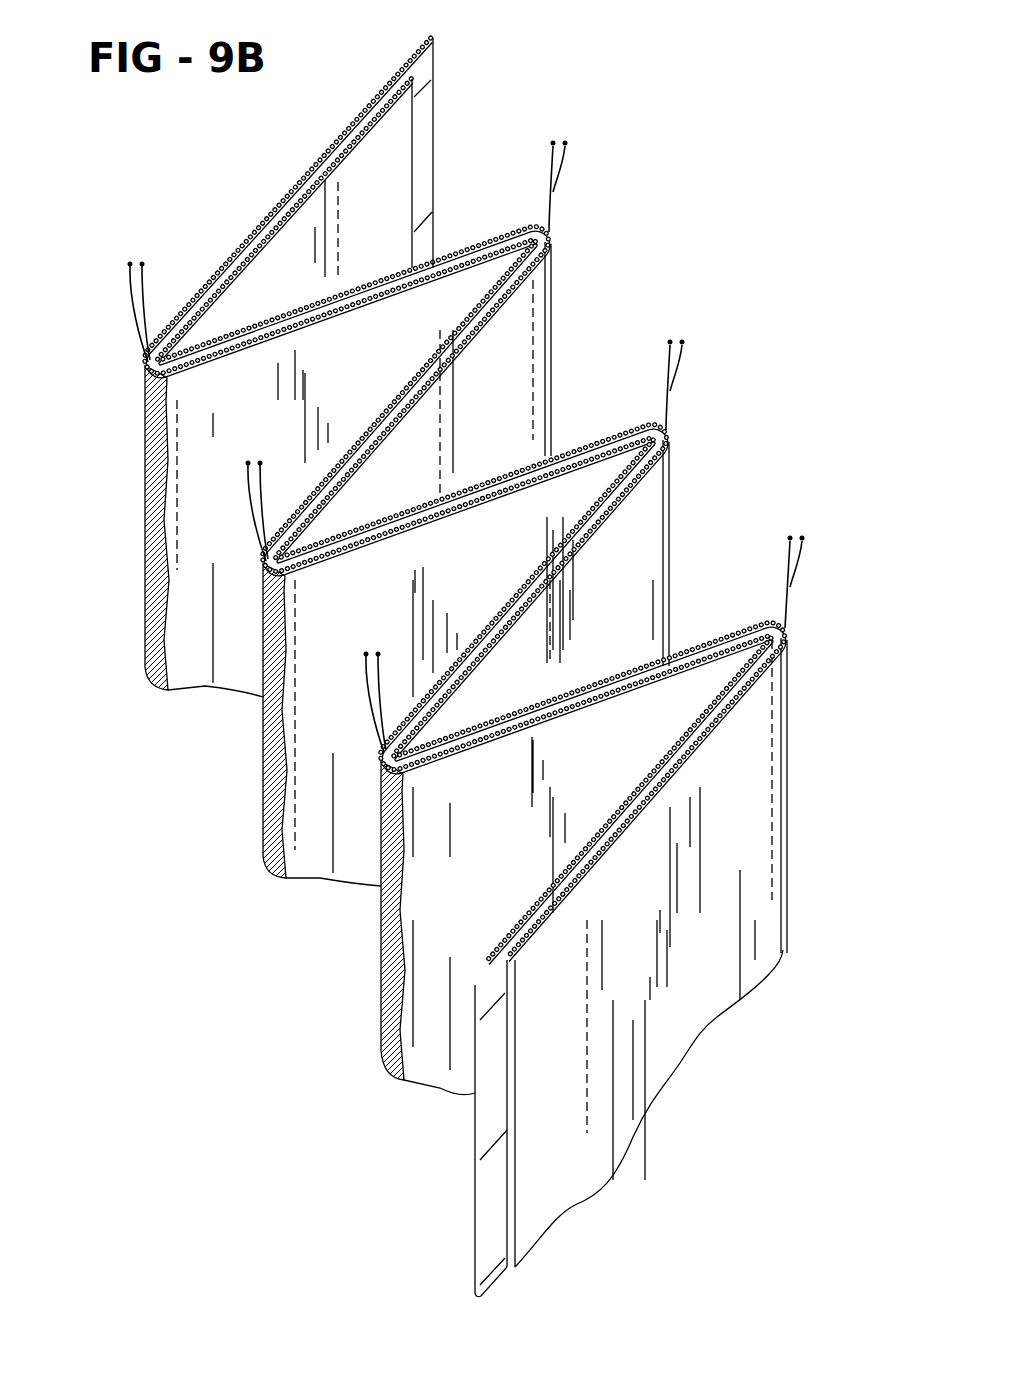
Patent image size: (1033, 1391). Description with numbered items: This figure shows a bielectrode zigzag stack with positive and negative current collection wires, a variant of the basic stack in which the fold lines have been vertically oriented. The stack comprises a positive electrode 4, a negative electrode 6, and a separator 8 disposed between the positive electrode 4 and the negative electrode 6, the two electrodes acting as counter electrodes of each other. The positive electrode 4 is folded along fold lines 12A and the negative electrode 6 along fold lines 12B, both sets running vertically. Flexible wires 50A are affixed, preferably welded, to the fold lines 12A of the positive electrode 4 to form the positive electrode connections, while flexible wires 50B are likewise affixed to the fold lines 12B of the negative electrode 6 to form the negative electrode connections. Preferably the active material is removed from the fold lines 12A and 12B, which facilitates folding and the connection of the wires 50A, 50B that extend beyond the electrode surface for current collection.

The positive electrode 4 is at (388, 80).
The negative electrode 6 is at (413, 76).
The separator 8 is at (432, 38).
The fold lines of the positive electrode 12A is at (146, 546).
The fold lines of the negative electrode 12B is at (547, 348).
The flexible wires 50A is at (129, 266).
The flexible wires 50B is at (566, 146).